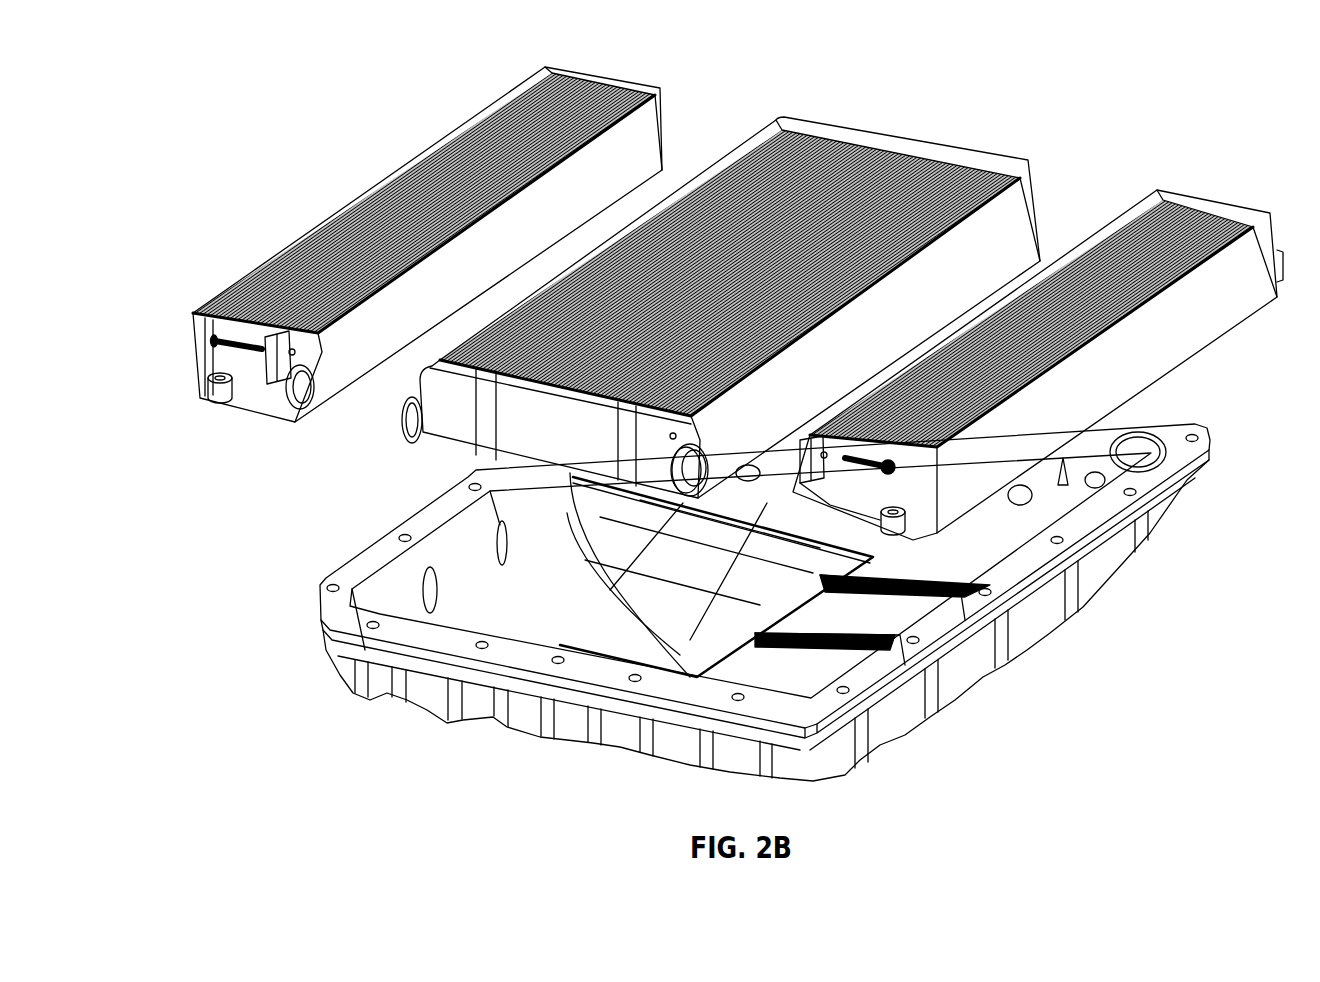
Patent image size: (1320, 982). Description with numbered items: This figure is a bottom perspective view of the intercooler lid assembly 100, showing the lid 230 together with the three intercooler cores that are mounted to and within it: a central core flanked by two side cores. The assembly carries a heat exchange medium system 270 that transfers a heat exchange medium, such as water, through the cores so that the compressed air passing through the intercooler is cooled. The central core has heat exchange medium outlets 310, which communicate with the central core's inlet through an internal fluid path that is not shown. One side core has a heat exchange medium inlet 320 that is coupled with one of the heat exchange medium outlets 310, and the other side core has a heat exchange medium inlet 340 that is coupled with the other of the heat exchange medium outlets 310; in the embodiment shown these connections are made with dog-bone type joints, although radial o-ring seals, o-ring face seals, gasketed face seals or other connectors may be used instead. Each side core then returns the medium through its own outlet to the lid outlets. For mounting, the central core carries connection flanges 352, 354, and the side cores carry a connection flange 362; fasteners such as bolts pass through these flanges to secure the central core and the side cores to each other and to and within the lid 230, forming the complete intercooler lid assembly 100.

The intercooler lid assembly 100 is at (247, 168).
The lid 230 is at (322, 600).
The heat exchange medium system 270 is at (197, 367).
The heat exchange medium outlets 310 is at (410, 440).
The heat exchange medium inlet 320 is at (303, 397).
The heat exchange medium inlet 340 is at (735, 537).
The connection flange 352 is at (435, 380).
The connection flange 354 is at (670, 440).
The connection flange 362 is at (290, 342).